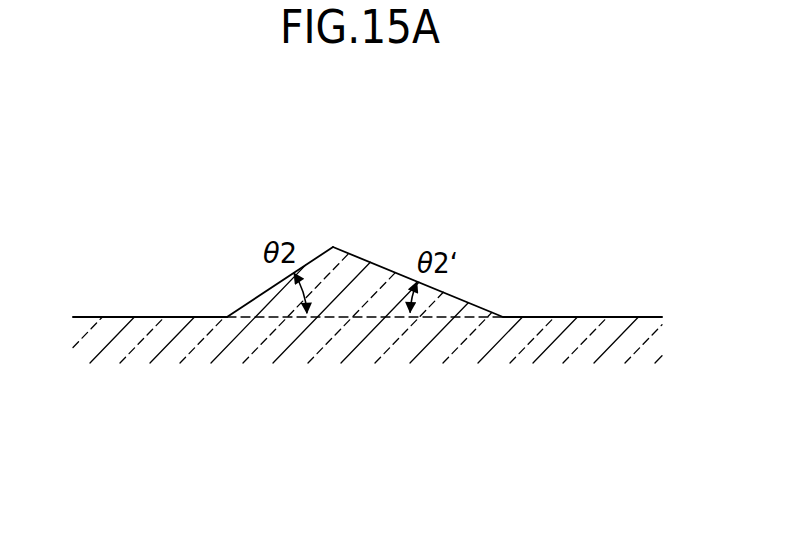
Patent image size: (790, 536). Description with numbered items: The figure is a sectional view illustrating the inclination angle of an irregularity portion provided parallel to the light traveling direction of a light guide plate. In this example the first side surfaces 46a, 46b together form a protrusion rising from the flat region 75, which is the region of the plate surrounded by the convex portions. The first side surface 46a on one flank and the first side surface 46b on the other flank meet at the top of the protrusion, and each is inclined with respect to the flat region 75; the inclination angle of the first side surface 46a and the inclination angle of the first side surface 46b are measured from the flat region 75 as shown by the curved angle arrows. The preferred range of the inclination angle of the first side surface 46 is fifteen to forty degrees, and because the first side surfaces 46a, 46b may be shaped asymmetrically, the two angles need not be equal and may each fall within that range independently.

The first side surface 46 is at (365, 192).
The first side surface 46a is at (320, 253).
The first side surface 46b is at (418, 224).
The flat region 75 is at (181, 317).